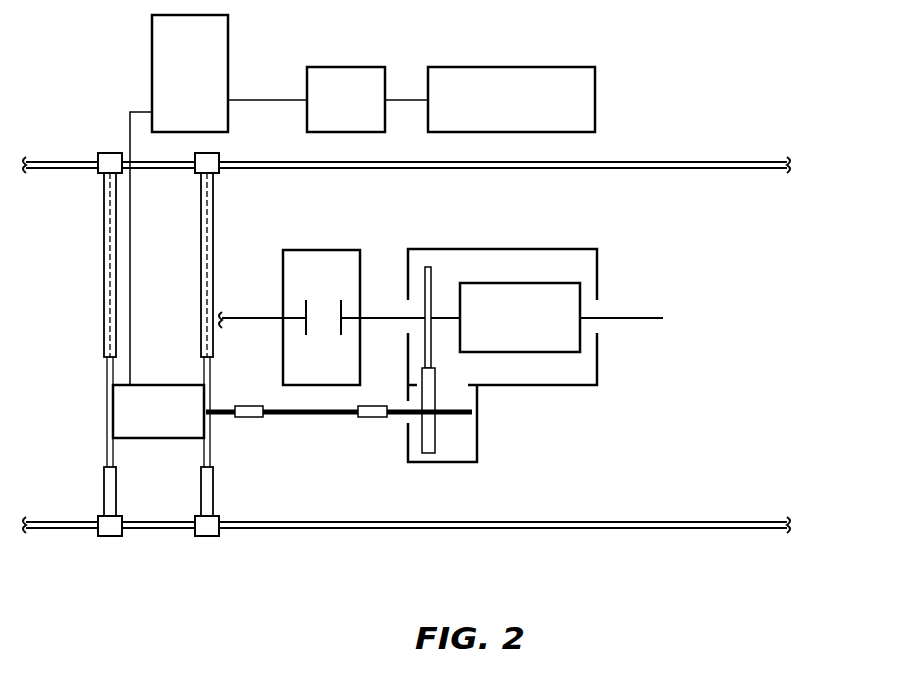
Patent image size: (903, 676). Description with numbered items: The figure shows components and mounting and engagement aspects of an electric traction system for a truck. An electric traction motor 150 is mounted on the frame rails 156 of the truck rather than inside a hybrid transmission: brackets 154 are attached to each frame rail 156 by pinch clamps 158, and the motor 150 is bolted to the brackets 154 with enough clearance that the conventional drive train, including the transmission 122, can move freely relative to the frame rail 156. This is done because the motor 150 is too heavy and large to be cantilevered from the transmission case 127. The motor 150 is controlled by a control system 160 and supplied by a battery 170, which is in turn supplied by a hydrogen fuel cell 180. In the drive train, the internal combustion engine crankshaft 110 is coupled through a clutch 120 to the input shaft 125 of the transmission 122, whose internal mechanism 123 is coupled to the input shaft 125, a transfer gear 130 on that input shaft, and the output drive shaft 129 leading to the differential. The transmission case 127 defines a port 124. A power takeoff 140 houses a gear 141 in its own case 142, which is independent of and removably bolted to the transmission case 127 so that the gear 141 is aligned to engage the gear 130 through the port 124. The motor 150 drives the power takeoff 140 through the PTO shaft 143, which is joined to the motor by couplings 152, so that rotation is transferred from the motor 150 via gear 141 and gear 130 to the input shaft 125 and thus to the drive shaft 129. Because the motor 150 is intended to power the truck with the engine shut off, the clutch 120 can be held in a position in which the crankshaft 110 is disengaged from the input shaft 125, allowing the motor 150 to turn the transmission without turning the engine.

The crankshaft 110 is at (238, 307).
The clutch 120 is at (308, 248).
The transmission 122 is at (617, 421).
The internal mechanism 123 is at (578, 353).
The port 124 is at (474, 400).
The input shaft 125 is at (388, 309).
The transmission case 127 is at (577, 249).
The drive shaft 129 is at (641, 316).
The transfer gear 130 is at (433, 270).
The power takeoff 140 is at (389, 468).
The gear 141 is at (430, 455).
The case 142 is at (478, 445).
The PTO shaft 143 is at (403, 417).
The electric traction motor 150 is at (142, 418).
The couplings 152 is at (363, 414).
The brackets 154 is at (104, 283).
The frame rails 156 is at (78, 162).
The pinch clamps 158 is at (102, 175).
The control system 160 is at (174, 110).
The battery 170 is at (330, 121).
The hydrogen fuel cell 180 is at (495, 121).